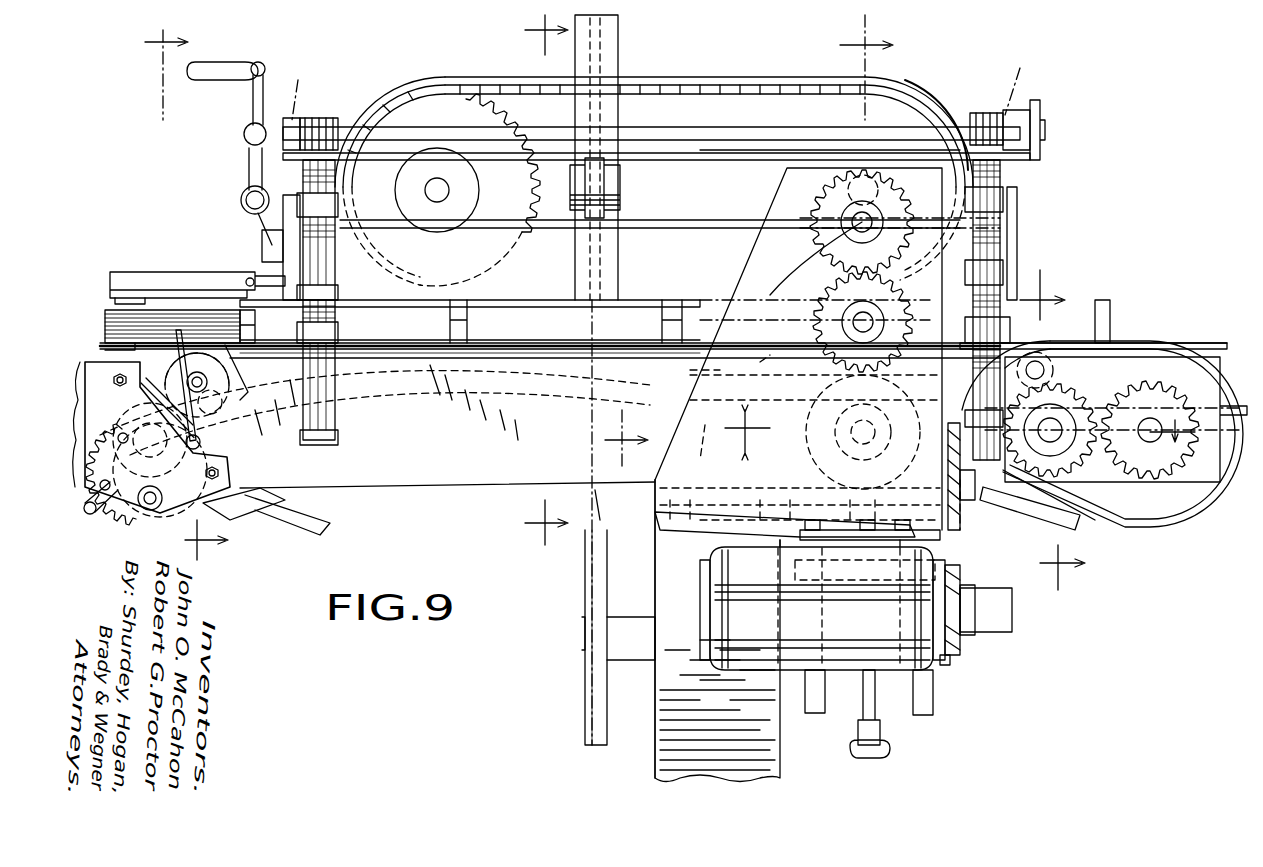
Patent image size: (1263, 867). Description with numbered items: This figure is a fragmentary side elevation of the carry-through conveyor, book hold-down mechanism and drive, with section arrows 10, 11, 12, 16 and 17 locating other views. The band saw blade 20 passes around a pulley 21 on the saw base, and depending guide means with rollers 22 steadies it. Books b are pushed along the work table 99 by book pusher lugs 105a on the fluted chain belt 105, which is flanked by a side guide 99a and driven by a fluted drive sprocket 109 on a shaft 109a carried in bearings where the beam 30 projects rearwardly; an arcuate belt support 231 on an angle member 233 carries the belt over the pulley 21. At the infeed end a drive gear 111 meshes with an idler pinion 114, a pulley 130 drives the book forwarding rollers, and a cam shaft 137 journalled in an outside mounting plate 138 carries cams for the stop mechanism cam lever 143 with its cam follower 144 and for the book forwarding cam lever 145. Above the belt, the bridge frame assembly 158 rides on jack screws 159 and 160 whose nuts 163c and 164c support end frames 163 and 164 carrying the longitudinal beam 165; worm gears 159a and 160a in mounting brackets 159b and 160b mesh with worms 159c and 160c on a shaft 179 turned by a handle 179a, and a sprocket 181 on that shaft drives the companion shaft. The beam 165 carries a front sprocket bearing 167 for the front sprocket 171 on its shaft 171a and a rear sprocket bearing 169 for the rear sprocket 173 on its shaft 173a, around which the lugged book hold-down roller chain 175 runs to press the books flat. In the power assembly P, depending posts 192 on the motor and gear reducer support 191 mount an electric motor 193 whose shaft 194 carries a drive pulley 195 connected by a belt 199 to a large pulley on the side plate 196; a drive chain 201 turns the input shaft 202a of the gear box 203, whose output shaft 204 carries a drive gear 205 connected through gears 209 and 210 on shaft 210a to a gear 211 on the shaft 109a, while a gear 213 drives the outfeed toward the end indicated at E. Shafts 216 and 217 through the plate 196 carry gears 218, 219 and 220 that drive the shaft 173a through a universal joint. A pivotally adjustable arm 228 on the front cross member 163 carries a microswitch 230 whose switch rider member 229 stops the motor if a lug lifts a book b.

The section line 10 is at (170, 299).
The section line 11 is at (536, 280).
The section line 12 is at (1052, 430).
The section line 16 is at (749, 248).
The section line 17 is at (960, 432).
The slide 20 is at (602, 505).
The saw blade 21 is at (612, 40).
The blade guide block 22 is at (620, 178).
The frame rail 30 is at (350, 490).
The main rail 99 is at (420, 358).
The rail strip 99a is at (485, 358).
The carriage bar 105 is at (530, 332).
The carriage posts 105a is at (1108, 305).
The chain loop 109 is at (1172, 510).
The chain frame 109a is at (1126, 419).
The gear 111 is at (120, 442).
The link arm 114 is at (206, 389).
The cam 130 is at (235, 380).
The pivot pin 137 is at (162, 496).
The bracket plate 138 is at (225, 462).
The gear 143 is at (139, 474).
The lever 144 is at (95, 490).
The link 145 is at (189, 416).
The crank hub 158 is at (243, 136).
The threaded column 159 is at (338, 250).
The bearing plate 159a is at (300, 118).
The bearing 159b is at (296, 93).
The worm 159c is at (330, 118).
The threaded shaft 160 is at (1000, 176).
The bearing 160a is at (1026, 79).
The bearing block 160b is at (1025, 110).
The worm 160c is at (978, 113).
The bracket 163 is at (285, 215).
The nut 163c is at (338, 209).
The plate 164 is at (1017, 220).
The nut 164c is at (1003, 240).
The guide bar 165 is at (678, 220).
The hub 167 is at (470, 201).
The rail 169 is at (770, 162).
The sprocket 171 is at (420, 105).
The sprocket shaft 171a is at (425, 189).
The chain guard 173 is at (885, 105).
The idler 173a is at (826, 190).
The chain 175 is at (700, 68).
The adjusting shaft 179 is at (715, 122).
The crank handle 179a is at (235, 62).
The collar 181 is at (1042, 152).
The motor mount plate 191 is at (800, 535).
The motor feet 192 is at (815, 713).
The motor 193 is at (760, 670).
The motor shaft 194 is at (990, 588).
The coupling 195 is at (962, 565).
The gear housing 196 is at (740, 252).
The bearing 199 is at (950, 655).
The shaft 201 is at (962, 522).
The plate 202a is at (1020, 500).
The shaft 203 is at (820, 380).
The gear 204 is at (863, 439).
The shaft 205 is at (795, 462).
The gear 209 is at (920, 398).
The sprocket 210 is at (1070, 400).
The sprocket shaft 210a is at (1098, 487).
The sprocket 211 is at (1112, 421).
The idler sprocket 213 is at (1050, 355).
The gear 216 is at (825, 322).
The gear 217 is at (900, 222).
The shaft 218 is at (714, 366).
The shaft 219 is at (776, 365).
The gear axis 220 is at (803, 258).
The block 228 is at (262, 250).
The pin 229 is at (150, 294).
The bar 230 is at (135, 272).
The guide arcs 231 is at (435, 478).
The shaft 233 is at (706, 428).
The rack b is at (105, 322).
The rail E is at (1227, 343).
The motor P is at (952, 683).